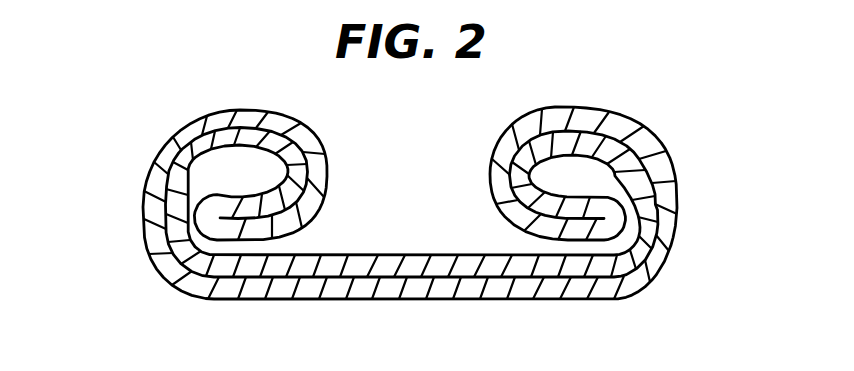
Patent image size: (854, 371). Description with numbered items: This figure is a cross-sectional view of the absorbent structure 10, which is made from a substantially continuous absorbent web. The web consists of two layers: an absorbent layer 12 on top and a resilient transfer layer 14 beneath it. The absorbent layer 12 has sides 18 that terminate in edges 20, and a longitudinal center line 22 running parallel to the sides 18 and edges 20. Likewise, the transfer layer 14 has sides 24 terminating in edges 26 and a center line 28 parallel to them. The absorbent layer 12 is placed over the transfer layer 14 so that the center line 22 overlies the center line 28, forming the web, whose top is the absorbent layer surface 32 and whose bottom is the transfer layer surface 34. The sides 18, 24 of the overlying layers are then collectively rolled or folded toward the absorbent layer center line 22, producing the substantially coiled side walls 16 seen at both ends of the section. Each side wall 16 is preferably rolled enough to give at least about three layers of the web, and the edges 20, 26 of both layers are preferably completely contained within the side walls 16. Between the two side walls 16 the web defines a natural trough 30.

The absorbent structure 10 is at (677, 79).
The absorbent layer 12 is at (373, 267).
The transfer layer 14 is at (533, 298).
The side walls 16 is at (143, 202).
The sides 18 is at (588, 138).
The edges 20 is at (614, 204).
The longitudinal center line 22 is at (410, 255).
The sides 24 is at (248, 117).
The edges 26 is at (195, 217).
The center line 28 is at (400, 300).
The trough 30 is at (402, 158).
The absorbent layer surface 32 is at (442, 253).
The transfer layer surface 34 is at (240, 300).